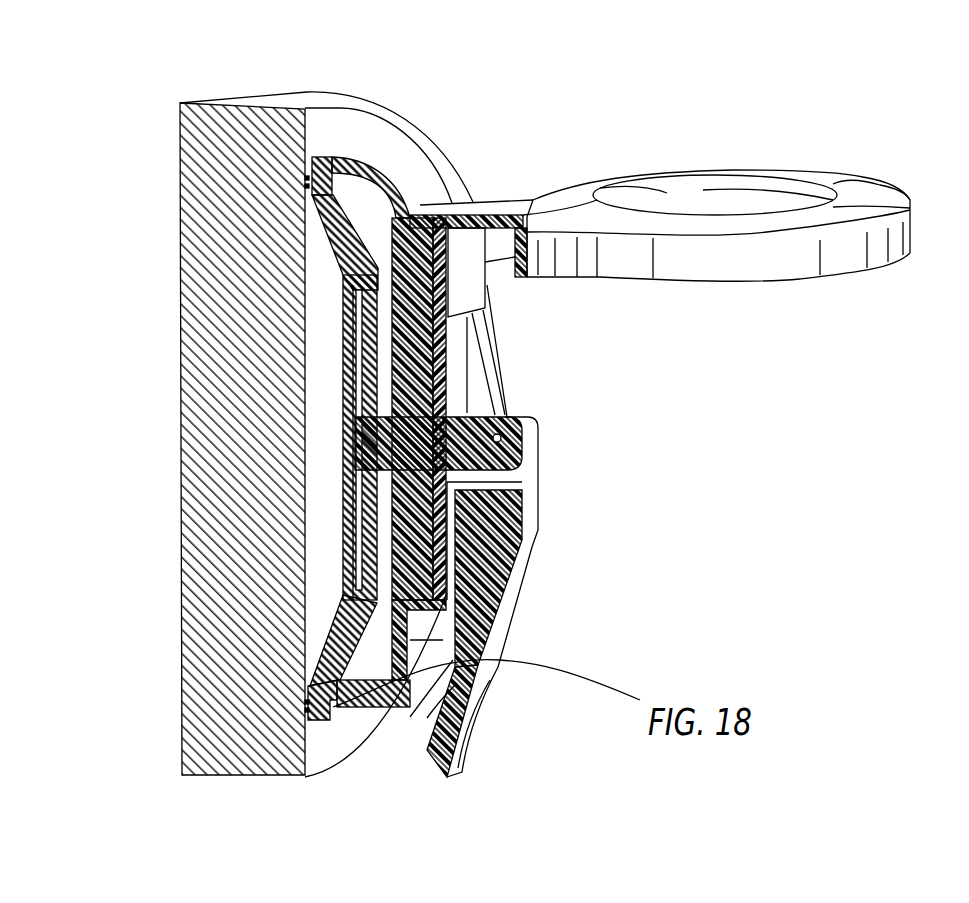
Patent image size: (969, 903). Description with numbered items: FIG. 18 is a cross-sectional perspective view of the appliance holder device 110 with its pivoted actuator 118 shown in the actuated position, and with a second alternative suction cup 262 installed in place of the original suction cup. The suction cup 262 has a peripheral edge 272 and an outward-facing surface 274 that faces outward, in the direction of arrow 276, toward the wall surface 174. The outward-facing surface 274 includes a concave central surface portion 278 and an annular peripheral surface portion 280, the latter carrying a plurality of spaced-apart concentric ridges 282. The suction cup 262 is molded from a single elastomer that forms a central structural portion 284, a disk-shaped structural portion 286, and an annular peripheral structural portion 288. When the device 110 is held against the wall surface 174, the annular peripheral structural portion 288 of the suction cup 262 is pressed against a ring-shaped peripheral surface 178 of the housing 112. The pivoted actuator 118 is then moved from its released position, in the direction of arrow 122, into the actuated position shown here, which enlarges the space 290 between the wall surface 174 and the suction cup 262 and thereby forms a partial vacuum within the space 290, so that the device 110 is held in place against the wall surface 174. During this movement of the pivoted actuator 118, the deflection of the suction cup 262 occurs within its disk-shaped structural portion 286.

The device 110 is at (505, 111).
The housing 112 is at (440, 640).
The pivoted actuator 118 is at (522, 532).
The arrow 122 is at (714, 467).
The wall surface 174 is at (383, 145).
The ring-shaped peripheral surface 178 is at (305, 185).
The second alternative suction cup 262 is at (327, 249).
The peripheral edge 272 is at (322, 157).
The outward-facing surface 274 is at (338, 343).
The arrow 276 is at (263, 840).
The concave central surface portion 278 is at (337, 530).
The annular peripheral surface portion 280 is at (303, 702).
The concentric ridges 282 is at (307, 710).
The central structural portion 284 is at (377, 400).
The disk-shaped structural portion 286 is at (328, 633).
The annular peripheral structural portion 288 is at (357, 707).
The space 290 is at (314, 437).